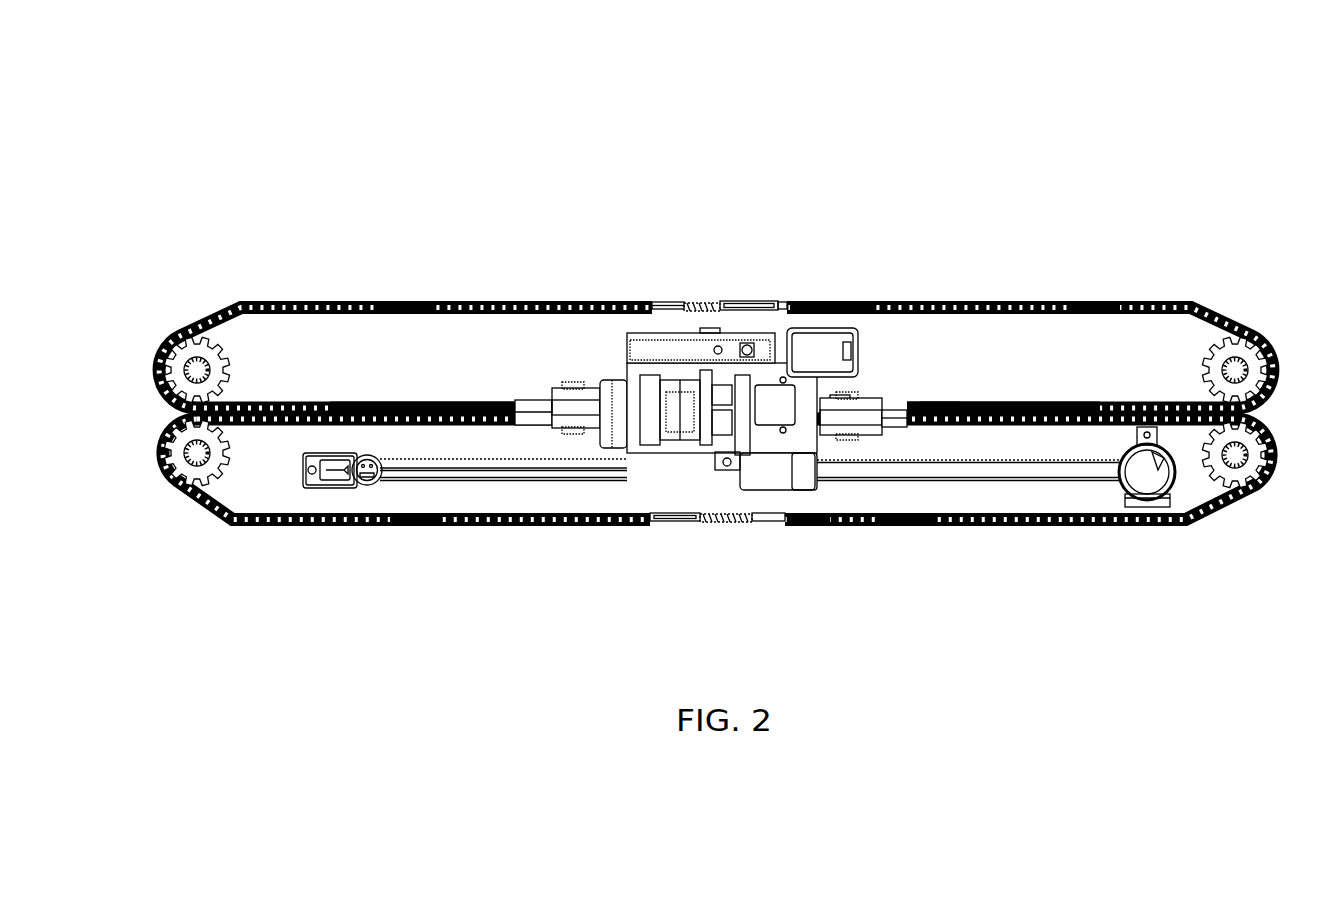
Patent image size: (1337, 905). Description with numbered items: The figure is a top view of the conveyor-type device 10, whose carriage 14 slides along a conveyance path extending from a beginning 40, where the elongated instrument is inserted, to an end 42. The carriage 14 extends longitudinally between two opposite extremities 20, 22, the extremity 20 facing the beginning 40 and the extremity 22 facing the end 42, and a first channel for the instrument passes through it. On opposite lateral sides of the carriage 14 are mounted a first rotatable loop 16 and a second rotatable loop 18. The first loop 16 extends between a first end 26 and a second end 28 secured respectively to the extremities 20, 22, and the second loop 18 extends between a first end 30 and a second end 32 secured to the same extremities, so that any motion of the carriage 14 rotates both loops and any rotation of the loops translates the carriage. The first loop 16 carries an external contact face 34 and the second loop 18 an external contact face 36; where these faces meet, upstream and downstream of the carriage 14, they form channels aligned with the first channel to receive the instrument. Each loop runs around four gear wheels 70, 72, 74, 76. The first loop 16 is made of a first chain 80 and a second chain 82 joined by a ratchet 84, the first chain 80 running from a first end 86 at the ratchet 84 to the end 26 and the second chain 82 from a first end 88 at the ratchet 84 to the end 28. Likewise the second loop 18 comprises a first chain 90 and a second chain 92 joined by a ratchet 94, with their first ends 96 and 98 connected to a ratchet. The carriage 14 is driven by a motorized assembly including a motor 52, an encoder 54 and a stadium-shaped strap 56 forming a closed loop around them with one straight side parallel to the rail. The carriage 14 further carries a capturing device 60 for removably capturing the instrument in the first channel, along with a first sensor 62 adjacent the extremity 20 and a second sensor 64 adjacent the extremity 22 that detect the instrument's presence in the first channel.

The conveyor-type device 10 is at (983, 143).
The carriage 14 is at (847, 287).
The first rotatable loop 16 is at (328, 278).
The second rotatable loop 18 is at (283, 550).
The extremity of carriage 20 is at (542, 374).
The extremity of carriage 22 is at (910, 384).
The first end of first loop 26 is at (512, 382).
The second end of first loop 28 is at (937, 384).
The first end of second loop 30 is at (523, 447).
The second end of second loop 32 is at (917, 440).
The external contact face 34 is at (322, 328).
The external contact face 36 is at (283, 502).
The beginning of conveyance path 40 is at (150, 398).
The end of conveyance path 42 is at (1275, 408).
The motor 52 is at (1143, 474).
The encoder 54 is at (360, 483).
The strap 56 is at (542, 481).
The capturing device 60 is at (652, 415).
The first sensor 62 is at (597, 428).
The second sensor 64 is at (885, 408).
The gear wheel 70 is at (192, 350).
The gear wheel 72 is at (1218, 356).
The gear wheel 74 is at (182, 476).
The gear wheel 76 is at (1223, 470).
The first chain 80 is at (402, 302).
The second chain 82 is at (1095, 300).
The ratchet 84 is at (739, 305).
The first end of first chain 86 is at (668, 287).
The first end of second chain 88 is at (791, 287).
The first chain 90 is at (410, 524).
The second chain 92 is at (902, 527).
The ratchet 94 is at (690, 520).
The first end of first chain 96 is at (650, 532).
The first end of second chain 98 is at (800, 542).